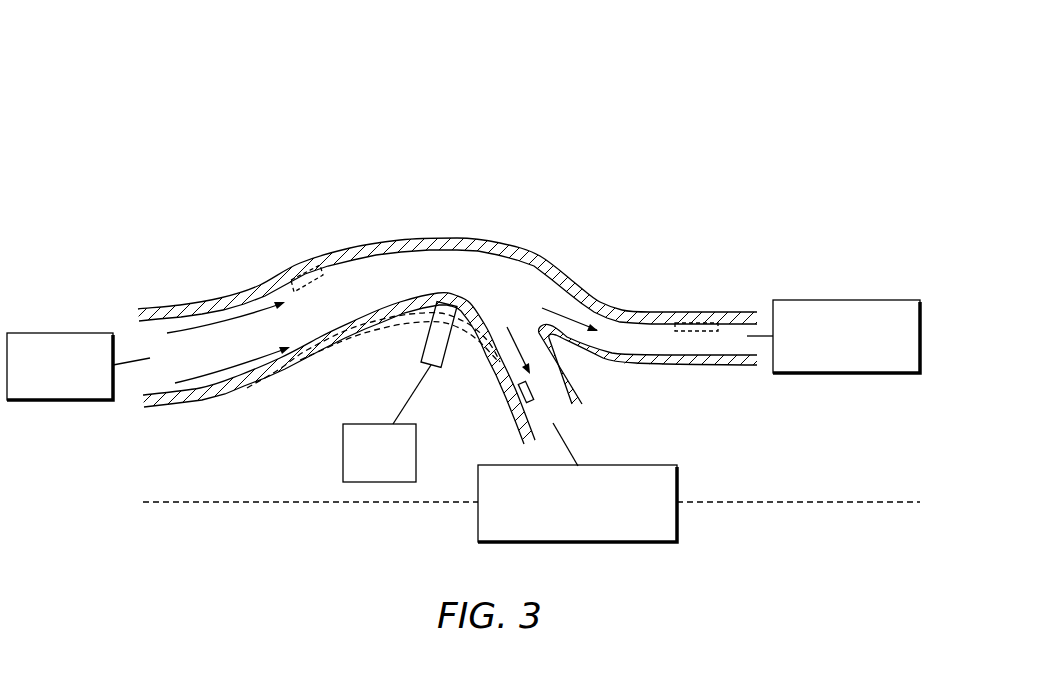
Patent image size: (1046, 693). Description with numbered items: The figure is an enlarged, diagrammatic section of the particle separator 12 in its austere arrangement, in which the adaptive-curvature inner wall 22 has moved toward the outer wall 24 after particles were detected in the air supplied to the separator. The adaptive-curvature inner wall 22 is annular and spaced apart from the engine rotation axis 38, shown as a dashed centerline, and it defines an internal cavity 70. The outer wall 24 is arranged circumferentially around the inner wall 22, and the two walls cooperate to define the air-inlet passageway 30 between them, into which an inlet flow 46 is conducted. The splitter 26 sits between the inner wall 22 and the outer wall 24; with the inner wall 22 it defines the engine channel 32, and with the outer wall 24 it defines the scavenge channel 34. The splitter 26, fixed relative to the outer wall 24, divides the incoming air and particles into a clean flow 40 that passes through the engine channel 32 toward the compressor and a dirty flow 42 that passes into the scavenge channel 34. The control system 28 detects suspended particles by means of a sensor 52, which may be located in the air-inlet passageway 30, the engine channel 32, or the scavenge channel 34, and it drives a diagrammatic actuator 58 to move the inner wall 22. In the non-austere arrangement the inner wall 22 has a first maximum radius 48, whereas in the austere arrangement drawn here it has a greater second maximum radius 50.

The particle separator 12 is at (140, 150).
The adaptive-curvature inner wall 22 is at (415, 292).
The outer wall 24 is at (470, 235).
The splitter 26 is at (571, 362).
The control system 28 is at (366, 424).
The air-inlet passageway 30 is at (58, 333).
The engine channel 32 is at (622, 465).
The scavenge channel 34 is at (825, 300).
The engine rotation axis 38 is at (255, 500).
The clean flow 40 is at (510, 355).
The dirty flow 42 is at (563, 320).
The inlet flow 46 is at (230, 327).
The first maximum radius 48 is at (447, 312).
The second maximum radius 50 is at (457, 288).
The sensor 52 is at (320, 262).
The actuator 58 is at (447, 348).
The internal cavity 70 is at (237, 425).